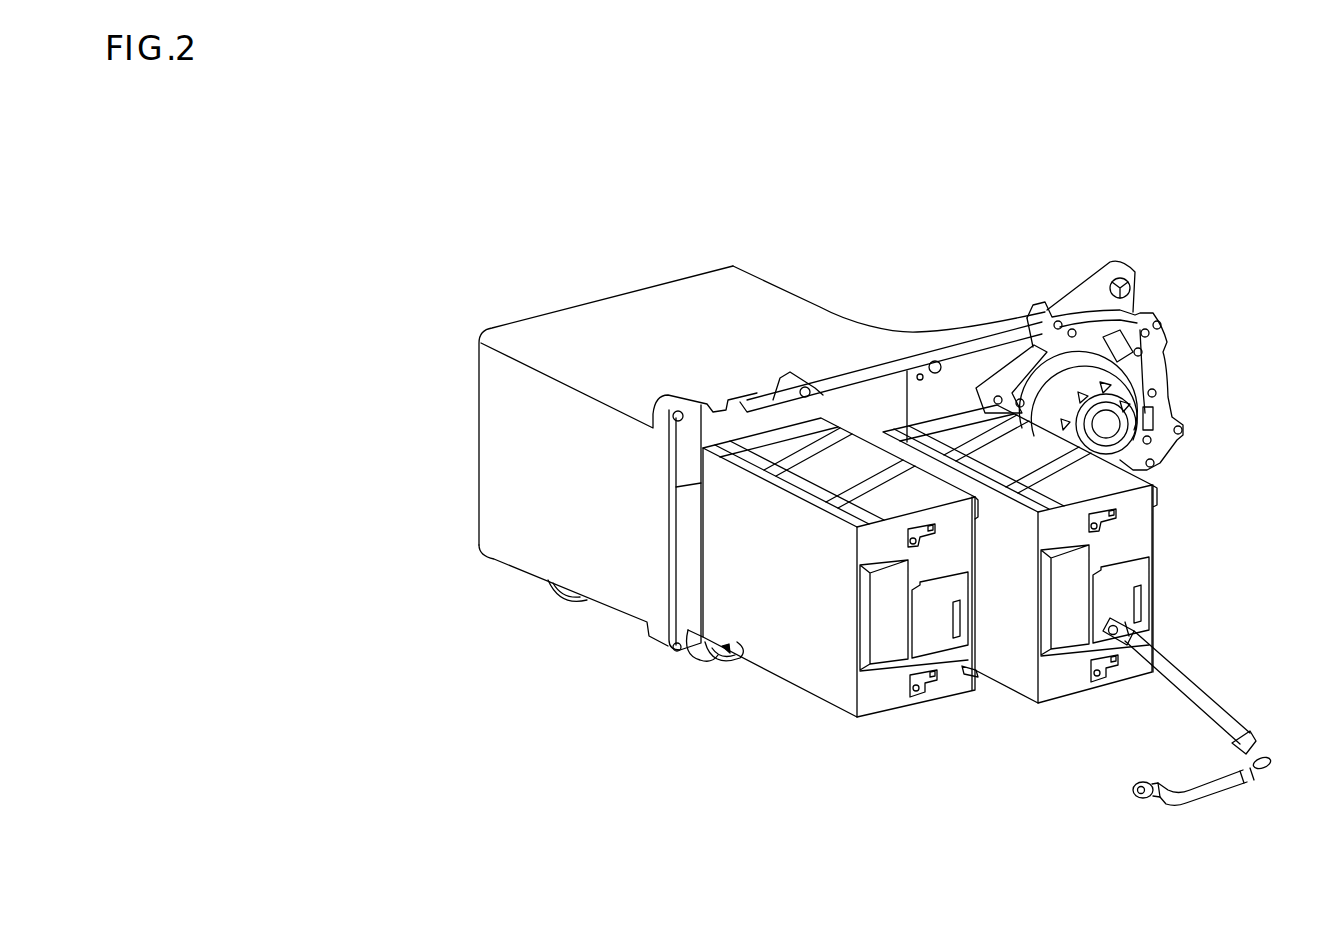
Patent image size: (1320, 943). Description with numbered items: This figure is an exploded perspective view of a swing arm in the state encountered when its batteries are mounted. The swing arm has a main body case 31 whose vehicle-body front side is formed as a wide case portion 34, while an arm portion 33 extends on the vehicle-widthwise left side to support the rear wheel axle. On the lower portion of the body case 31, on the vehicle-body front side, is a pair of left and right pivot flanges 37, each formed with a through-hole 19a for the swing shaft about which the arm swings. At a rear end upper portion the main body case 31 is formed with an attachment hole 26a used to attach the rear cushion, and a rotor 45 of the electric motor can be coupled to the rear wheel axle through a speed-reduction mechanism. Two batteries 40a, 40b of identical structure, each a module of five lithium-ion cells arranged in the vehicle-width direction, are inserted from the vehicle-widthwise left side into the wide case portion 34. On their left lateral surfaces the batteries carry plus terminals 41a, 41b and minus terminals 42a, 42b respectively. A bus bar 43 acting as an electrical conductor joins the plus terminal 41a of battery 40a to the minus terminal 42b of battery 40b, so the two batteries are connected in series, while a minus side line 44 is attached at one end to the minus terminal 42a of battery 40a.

The wide case portion 34 is at (655, 313).
The main body case 31 is at (800, 289).
The arm portion 33 is at (1007, 332).
The attachment hole 26a is at (1131, 288).
The rotor 45 is at (1123, 387).
The pivot flanges 37 is at (555, 590).
The through-holes 19a is at (727, 663).
The battery 40a is at (800, 658).
The battery 40b is at (1013, 668).
The plus terminal 41a is at (910, 541).
The plus terminal 41b is at (1113, 524).
The minus terminal 42a is at (913, 699).
The minus terminal 42b is at (1087, 678).
The bus bar 43 is at (1180, 677).
The minus side line 44 is at (1203, 793).